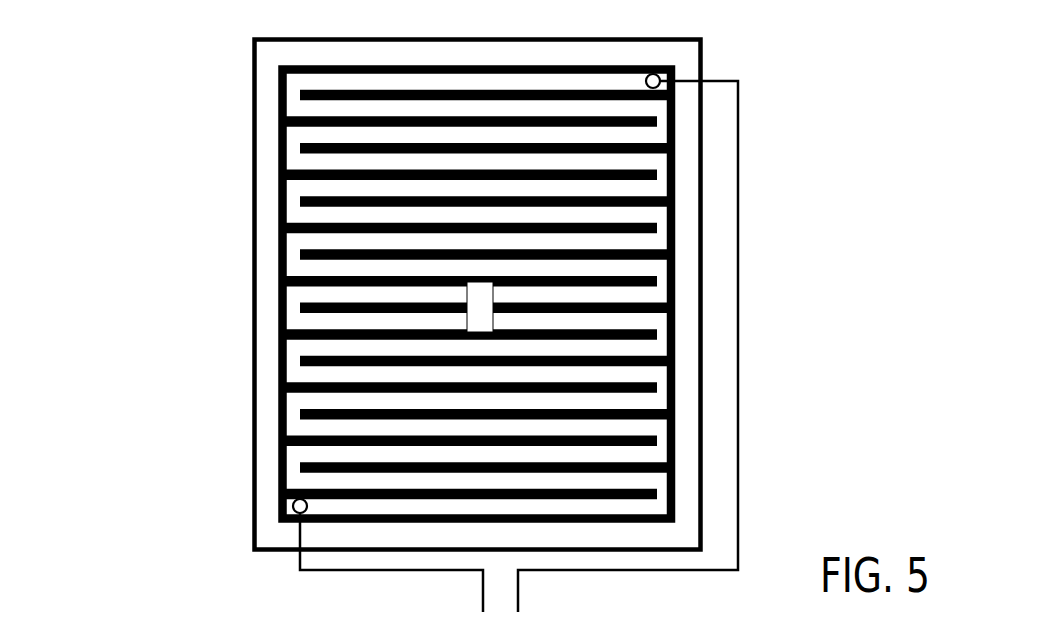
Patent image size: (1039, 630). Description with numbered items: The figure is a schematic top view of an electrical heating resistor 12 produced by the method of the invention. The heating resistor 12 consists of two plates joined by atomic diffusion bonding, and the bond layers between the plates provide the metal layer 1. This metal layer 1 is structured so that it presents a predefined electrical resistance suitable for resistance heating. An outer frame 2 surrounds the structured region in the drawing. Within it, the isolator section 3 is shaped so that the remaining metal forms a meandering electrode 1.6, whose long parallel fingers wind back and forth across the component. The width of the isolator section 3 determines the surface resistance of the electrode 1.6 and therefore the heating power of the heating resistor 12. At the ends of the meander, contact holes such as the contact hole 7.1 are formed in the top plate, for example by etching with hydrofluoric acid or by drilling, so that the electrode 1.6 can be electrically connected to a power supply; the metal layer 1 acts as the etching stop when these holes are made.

The electrical heating resistor 12 is at (140, 101).
The housing frame 2 is at (712, 229).
The isolator section 3 is at (282, 343).
The meandering electrode 1.6 is at (297, 400).
The contact hole 7.1 is at (293, 506).
The metal layer 1 is at (488, 321).